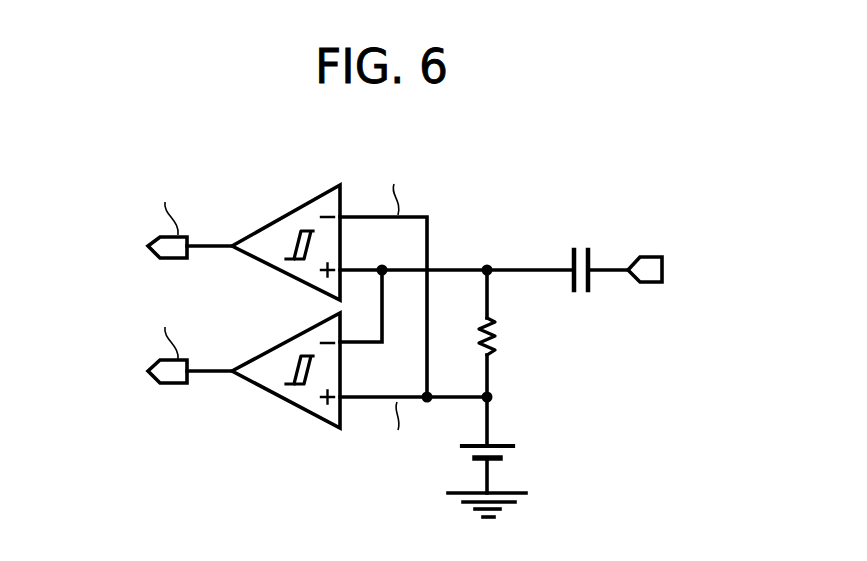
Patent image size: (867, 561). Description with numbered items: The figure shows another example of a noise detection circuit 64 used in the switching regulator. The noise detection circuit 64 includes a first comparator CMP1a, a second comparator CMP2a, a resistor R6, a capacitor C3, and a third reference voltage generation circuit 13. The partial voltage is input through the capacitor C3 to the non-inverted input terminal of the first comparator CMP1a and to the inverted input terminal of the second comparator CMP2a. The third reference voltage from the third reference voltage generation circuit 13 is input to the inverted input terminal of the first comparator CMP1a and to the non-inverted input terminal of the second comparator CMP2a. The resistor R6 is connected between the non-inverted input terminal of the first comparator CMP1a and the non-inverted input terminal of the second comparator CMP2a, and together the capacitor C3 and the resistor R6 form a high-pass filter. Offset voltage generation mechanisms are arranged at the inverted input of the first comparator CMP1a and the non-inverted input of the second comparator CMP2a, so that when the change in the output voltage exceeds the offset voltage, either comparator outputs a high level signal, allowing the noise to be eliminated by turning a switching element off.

The noise detection circuit 64 is at (489, 177).
The third reference voltage generation circuit 13 is at (514, 456).
The first comparator CMP1a is at (296, 173).
The second comparator CMP2a is at (276, 396).
The resistor R6 is at (509, 336).
The capacitor C3 is at (581, 256).